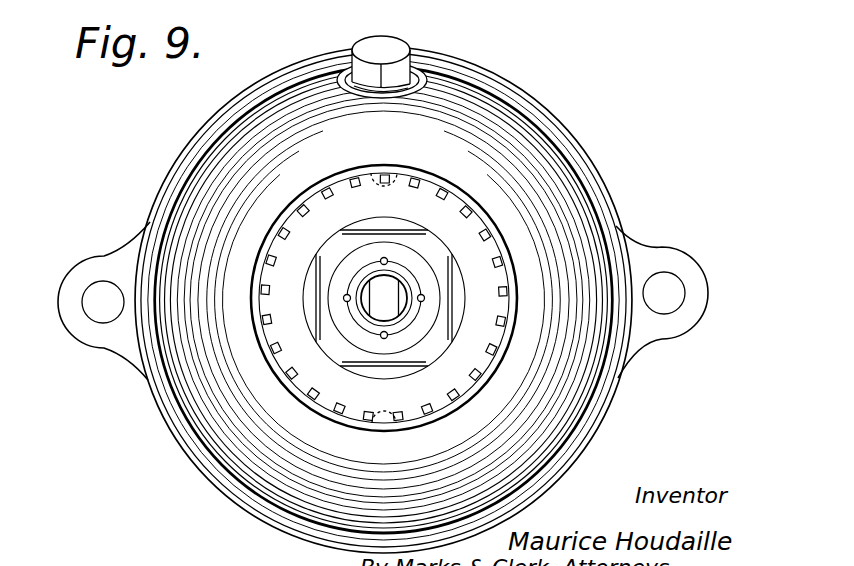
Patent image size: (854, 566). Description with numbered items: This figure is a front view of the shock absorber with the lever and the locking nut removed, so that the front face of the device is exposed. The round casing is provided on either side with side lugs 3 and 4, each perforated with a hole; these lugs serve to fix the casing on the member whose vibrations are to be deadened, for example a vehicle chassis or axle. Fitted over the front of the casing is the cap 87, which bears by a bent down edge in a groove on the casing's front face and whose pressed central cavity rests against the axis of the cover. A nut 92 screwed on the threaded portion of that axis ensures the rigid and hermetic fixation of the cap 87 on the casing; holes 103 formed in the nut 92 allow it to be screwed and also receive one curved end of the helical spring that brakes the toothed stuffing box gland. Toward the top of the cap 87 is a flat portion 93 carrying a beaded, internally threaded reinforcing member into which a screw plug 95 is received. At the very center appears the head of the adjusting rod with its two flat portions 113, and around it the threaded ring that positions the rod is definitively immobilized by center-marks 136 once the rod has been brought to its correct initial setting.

The side lug 3 is at (663, 255).
The side lug 4 is at (92, 266).
The cap 87 is at (383, 300).
The nut 92 is at (262, 273).
The flat portion 93 is at (422, 75).
The screw plug 95 is at (387, 50).
The holes 103 is at (300, 205).
The flat portions 113 is at (381, 308).
The center-marks 136 is at (422, 296).